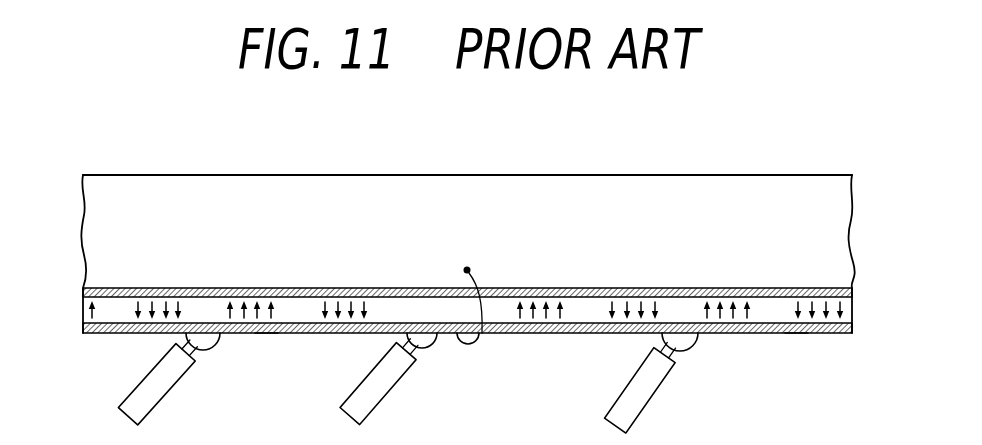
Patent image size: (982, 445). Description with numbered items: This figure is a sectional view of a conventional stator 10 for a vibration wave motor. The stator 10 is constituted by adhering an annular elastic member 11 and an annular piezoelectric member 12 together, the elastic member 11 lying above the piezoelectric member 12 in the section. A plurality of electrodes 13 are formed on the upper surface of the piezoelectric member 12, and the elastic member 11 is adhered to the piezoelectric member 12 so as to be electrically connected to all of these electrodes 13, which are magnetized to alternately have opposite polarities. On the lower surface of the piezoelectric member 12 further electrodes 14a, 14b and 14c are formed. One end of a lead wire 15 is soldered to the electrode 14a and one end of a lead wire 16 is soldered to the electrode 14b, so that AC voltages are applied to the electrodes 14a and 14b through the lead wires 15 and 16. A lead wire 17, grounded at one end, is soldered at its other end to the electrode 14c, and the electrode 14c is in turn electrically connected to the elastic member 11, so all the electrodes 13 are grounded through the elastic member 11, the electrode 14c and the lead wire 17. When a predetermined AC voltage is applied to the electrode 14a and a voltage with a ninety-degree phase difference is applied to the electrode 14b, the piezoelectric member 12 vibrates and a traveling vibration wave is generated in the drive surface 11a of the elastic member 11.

The stator 10 is at (534, 171).
The elastic member 11 is at (110, 228).
The drive surface 11a is at (203, 175).
The piezoelectric member 12 is at (88, 310).
The electrodes 13 is at (820, 289).
The electrode 14a is at (266, 334).
The electrode 14b is at (795, 334).
The electrode 14c is at (451, 335).
The lead wire 15 is at (162, 395).
The lead wire 16 is at (640, 407).
The lead wire 17 is at (387, 393).